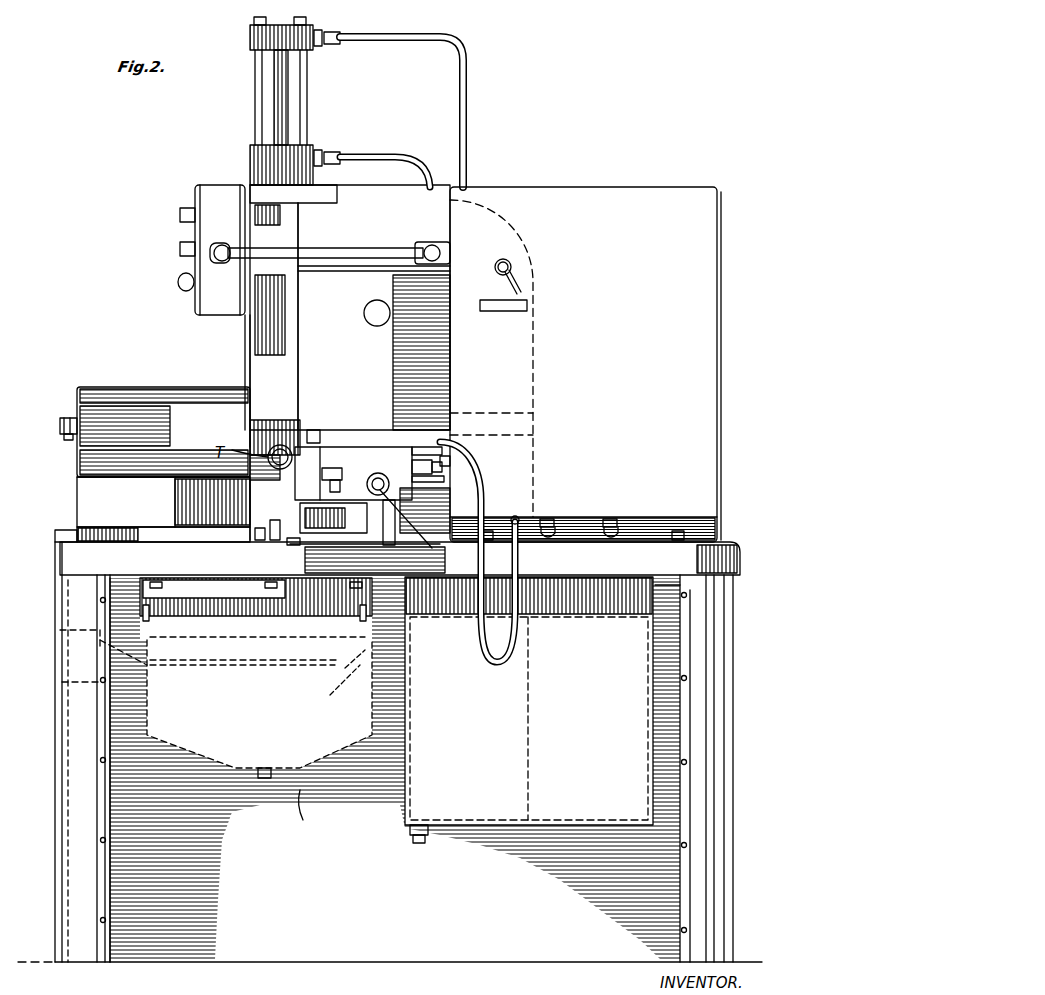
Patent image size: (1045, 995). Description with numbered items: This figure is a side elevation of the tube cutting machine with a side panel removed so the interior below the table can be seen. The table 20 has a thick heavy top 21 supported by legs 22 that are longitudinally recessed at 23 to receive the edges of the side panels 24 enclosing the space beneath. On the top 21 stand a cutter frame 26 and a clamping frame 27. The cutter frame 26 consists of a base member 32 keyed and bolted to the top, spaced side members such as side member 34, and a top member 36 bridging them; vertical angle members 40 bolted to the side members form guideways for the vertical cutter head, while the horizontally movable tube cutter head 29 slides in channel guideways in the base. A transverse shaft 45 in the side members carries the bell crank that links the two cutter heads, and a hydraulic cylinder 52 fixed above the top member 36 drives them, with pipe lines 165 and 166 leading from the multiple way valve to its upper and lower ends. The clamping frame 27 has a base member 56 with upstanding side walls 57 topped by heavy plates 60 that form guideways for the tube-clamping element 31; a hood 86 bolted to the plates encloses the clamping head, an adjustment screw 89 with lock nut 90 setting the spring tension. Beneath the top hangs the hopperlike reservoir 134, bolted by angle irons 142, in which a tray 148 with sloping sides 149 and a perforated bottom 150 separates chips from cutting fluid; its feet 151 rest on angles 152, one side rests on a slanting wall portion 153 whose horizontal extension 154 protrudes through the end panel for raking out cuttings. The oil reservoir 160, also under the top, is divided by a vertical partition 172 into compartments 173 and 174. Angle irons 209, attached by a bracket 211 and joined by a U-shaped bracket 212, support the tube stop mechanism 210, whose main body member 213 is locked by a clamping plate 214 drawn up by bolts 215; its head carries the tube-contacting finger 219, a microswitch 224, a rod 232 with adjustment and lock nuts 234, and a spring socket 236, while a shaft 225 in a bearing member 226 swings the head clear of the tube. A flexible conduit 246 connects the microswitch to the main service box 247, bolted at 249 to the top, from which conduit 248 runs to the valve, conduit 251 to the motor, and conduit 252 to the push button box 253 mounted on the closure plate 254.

The table 20 is at (60, 535).
The top 21 is at (145, 545).
The legs 22 is at (75, 740).
The recesses 23 is at (100, 823).
The side panels 24 is at (297, 950).
The cutter frame 26 is at (440, 205).
The clamping frame 27 is at (80, 508).
The horizontally movable tube cutter head 29 is at (262, 415).
The tube-clamping element 31 is at (268, 450).
The base member 32 is at (435, 500).
The side member 34 is at (440, 372).
The top member 36 is at (330, 192).
The vertical angle member 40 is at (275, 292).
The transverse shaft 45 is at (366, 318).
The hydraulic cylinder 52 is at (275, 102).
The base member 56 is at (95, 540).
The side wall 57 is at (100, 490).
The heavy plate 60 is at (172, 485).
The hood 86 is at (148, 390).
The adjustment screw 89 is at (64, 438).
The lock nut 90 is at (60, 422).
The hopperlike reservoir 134 is at (303, 800).
The angle irons 142 is at (248, 598).
The tray 148 is at (187, 636).
The sloping sides 149 is at (348, 636).
The perforated bottom 150 is at (218, 665).
The feet 151 is at (341, 670).
The angles 152 is at (344, 687).
The slanting wall portion 153 is at (70, 682).
The horizontal extension 154 is at (70, 640).
The oil reservoir 160 is at (640, 695).
The pipe line 165 is at (402, 33).
The pipe line 166 is at (420, 162).
The vertical partition 172 is at (535, 738).
The compartment 173 is at (445, 832).
The compartment 174 is at (676, 655).
The angle irons 209 is at (305, 525).
The tube stop mechanism 210 is at (430, 450).
The bracket 211 is at (255, 537).
The U-shaped bracket 212 is at (272, 545).
The main body member 213 is at (352, 455).
The clamping plate 214 is at (322, 545).
The bolts 215 is at (318, 500).
The tube-contacting finger 219 is at (268, 425).
The microswitch 224 is at (316, 430).
The shaft 225 is at (366, 478).
The bearing member 226 is at (430, 546).
The rod 232 is at (448, 462).
The adjustment and lock nuts 234 is at (412, 468).
The socket 236 is at (440, 480).
The flexible conduit 246 is at (480, 630).
The main service box 247 is at (645, 202).
The conduit 248 is at (620, 510).
The bolts 249 is at (490, 530).
The conduit 251 is at (556, 520).
The conduit 252 is at (356, 248).
The push button box 253 is at (220, 185).
The closure plate 254 is at (245, 350).